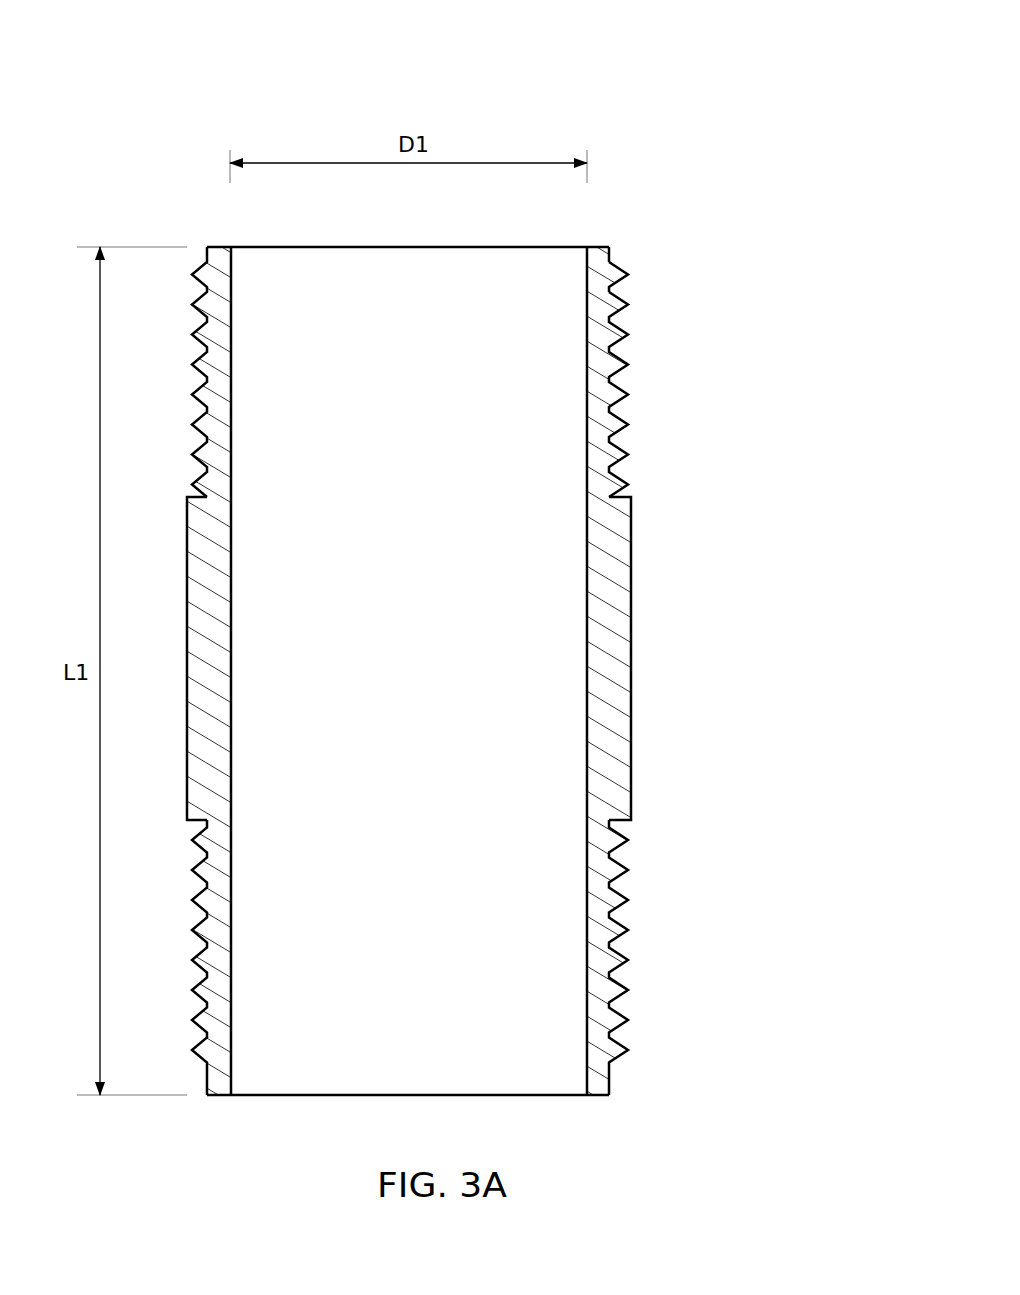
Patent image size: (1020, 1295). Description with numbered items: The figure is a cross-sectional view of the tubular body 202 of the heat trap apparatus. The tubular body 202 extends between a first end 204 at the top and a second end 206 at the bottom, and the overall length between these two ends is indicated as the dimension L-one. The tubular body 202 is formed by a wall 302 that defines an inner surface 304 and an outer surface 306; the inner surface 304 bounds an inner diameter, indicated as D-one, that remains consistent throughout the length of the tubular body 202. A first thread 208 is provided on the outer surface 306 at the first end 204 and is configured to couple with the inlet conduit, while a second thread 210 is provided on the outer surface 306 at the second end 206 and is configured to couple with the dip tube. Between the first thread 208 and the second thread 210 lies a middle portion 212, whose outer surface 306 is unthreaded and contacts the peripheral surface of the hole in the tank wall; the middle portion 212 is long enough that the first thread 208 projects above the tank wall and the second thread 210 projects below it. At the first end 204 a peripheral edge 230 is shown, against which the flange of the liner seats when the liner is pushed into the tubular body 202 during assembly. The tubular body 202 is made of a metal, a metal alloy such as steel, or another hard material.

The tubular body 202 is at (581, 91).
The first end 204 is at (630, 254).
The second end 206 is at (617, 1107).
The first thread 208 is at (621, 356).
The second thread 210 is at (622, 887).
The middle portion 212 is at (632, 648).
The peripheral edge 230 is at (605, 247).
The wall 302 is at (606, 300).
The inner surface 304 is at (232, 318).
The outer surface 306 is at (187, 523).